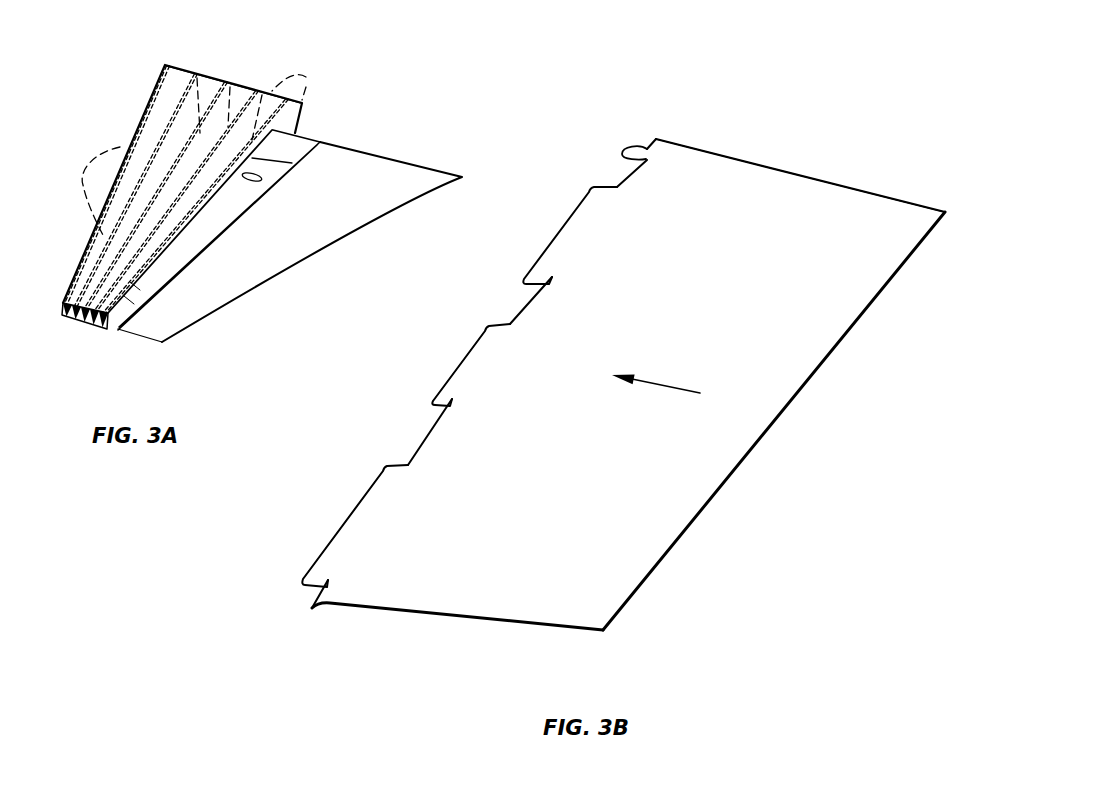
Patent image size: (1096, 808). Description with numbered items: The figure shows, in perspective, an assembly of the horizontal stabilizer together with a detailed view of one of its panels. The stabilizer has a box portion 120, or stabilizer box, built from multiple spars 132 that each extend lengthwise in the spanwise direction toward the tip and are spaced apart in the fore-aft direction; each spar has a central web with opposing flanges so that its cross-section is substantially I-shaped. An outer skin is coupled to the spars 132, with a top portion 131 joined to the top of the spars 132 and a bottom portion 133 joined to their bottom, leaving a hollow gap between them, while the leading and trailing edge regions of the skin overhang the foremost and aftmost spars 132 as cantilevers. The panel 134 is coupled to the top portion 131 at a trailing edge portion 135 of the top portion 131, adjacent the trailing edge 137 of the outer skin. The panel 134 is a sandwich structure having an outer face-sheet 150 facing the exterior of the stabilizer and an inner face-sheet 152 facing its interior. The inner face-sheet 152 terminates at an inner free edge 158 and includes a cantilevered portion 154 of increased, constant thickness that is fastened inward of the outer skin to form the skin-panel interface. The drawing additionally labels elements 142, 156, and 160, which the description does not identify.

In FIG. 3A, the box portion 120 is at (220, 72).
In FIG. 3A, the top portion of the outer skin 131 is at (180, 85).
In FIG. 3A, the spars 132 is at (76, 186).
In FIG. 3A, the bottom portion of the outer skin 133 is at (85, 330).
In FIG. 3A, the panel 134 is at (312, 131).
In FIG. 3B, the panel 134 is at (759, 153).
In FIG. 3A, the trailing edge portion 135 is at (133, 285).
In FIG. 3A, the trailing edge of the outer skin 137 is at (128, 300).
In FIG. 3A, the base plate 142 is at (410, 163).
In FIG. 3B, the outer face-sheet 150 is at (833, 205).
In FIG. 3B, the inner face-sheet 152 is at (367, 483).
In FIG. 3B, the cantilevered portion 154 is at (582, 207).
In FIG. 3B, the side edge 156 is at (745, 460).
In FIG. 3B, the inner free edge 158 is at (457, 365).
In FIG. 3B, the direction arrow 160 is at (672, 381).